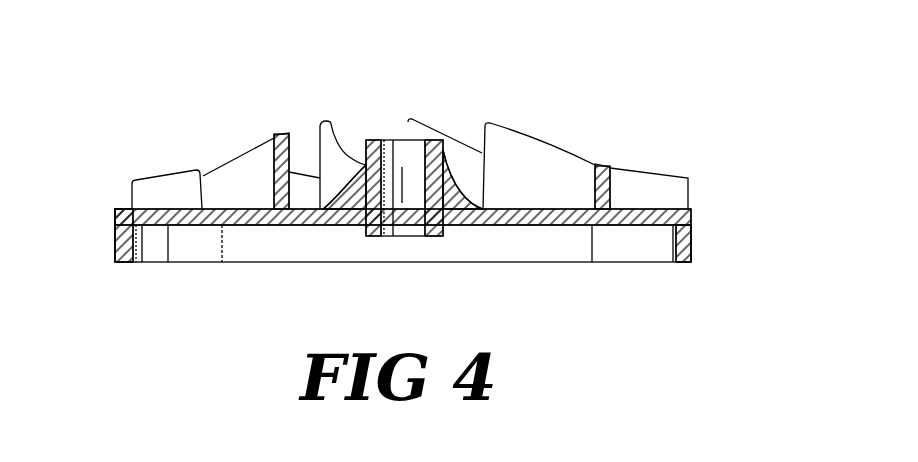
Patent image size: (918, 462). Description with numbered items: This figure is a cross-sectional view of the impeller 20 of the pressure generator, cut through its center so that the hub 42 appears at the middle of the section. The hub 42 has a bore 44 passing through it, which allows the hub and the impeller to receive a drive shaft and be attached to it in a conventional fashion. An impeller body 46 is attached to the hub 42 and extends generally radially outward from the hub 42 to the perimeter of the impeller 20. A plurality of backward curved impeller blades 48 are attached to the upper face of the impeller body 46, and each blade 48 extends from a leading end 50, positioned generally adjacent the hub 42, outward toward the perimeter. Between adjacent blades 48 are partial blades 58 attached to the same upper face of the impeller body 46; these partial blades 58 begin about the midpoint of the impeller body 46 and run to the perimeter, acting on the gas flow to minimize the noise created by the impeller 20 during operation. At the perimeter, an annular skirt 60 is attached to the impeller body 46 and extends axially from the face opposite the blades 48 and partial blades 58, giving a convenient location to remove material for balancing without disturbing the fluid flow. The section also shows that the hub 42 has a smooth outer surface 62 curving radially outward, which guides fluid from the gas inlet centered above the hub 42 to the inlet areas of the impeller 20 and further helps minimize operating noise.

The impeller 20 is at (622, 108).
The hub 42 is at (366, 235).
The bore 44 is at (409, 225).
The impeller body 46 is at (592, 262).
The impeller blades 48 is at (277, 133).
The leading end 50 is at (334, 119).
The partial blades 58 is at (160, 172).
The annular skirt 60 is at (147, 250).
The smooth outer surface 62 is at (460, 178).